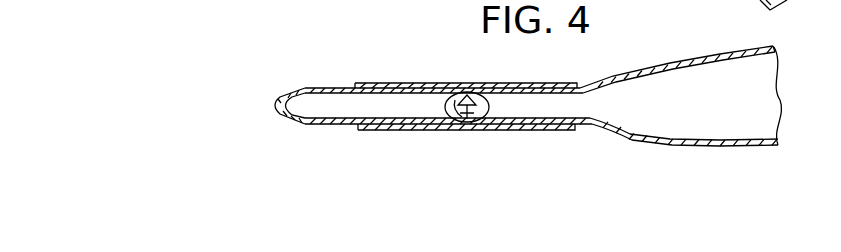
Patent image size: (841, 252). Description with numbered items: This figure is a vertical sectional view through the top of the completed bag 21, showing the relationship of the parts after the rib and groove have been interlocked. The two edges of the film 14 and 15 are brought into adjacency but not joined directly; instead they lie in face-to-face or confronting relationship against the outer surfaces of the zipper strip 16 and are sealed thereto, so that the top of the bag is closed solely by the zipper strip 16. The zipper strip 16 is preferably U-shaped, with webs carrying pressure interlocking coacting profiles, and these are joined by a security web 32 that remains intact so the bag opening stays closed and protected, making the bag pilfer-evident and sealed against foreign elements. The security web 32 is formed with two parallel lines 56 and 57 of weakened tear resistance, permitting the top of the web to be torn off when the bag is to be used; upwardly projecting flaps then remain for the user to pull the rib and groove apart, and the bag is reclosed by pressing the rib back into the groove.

The edge of the film 14 is at (433, 87).
The edge of the film 15 is at (425, 125).
The zipper strip 16 is at (262, 110).
The completed bag 21 is at (655, 141).
The security web 32 is at (289, 93).
The line of weakened tear resistance 56 is at (332, 92).
The line of weakened tear resistance 57 is at (333, 124).